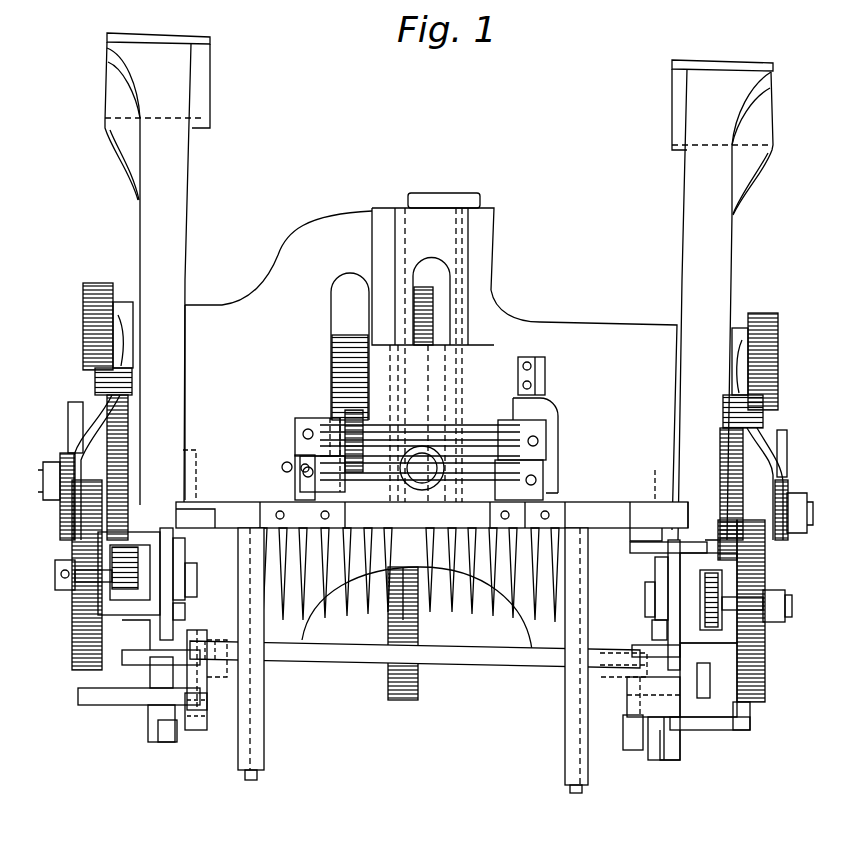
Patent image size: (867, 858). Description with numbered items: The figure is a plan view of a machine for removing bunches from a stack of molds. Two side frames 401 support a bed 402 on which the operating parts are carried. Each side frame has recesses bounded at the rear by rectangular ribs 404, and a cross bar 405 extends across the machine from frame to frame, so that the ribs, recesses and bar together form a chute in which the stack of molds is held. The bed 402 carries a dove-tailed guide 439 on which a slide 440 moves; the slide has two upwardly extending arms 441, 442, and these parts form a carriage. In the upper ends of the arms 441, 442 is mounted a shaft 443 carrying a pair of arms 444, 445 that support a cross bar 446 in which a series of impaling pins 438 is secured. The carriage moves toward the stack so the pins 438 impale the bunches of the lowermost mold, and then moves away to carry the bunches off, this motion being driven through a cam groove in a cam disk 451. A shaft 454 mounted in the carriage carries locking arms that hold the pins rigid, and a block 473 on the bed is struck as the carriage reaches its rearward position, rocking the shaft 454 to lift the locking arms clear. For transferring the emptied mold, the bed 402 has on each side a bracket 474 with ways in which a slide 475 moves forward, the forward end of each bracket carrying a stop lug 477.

The side frames 401 is at (439, 286).
The bed 402 is at (430, 370).
The rectangular ribs 404 is at (433, 599).
The cross bar 405 is at (415, 656).
The impaling pins 438 is at (429, 608).
The dove-tailed guide 439 is at (412, 359).
The slide 440 is at (441, 438).
The arm 441 is at (549, 434).
The arm 442 is at (320, 422).
The shaft 443 is at (468, 480).
The arm 444 is at (300, 496).
The arm 445 is at (572, 503).
The cross bar 446 is at (432, 521).
The cam disk 451 is at (395, 700).
The shaft 454 is at (420, 428).
The block 473 is at (540, 379).
The bracket 474 is at (263, 697).
The slide 475 is at (240, 716).
The stop lug 477 is at (258, 778).